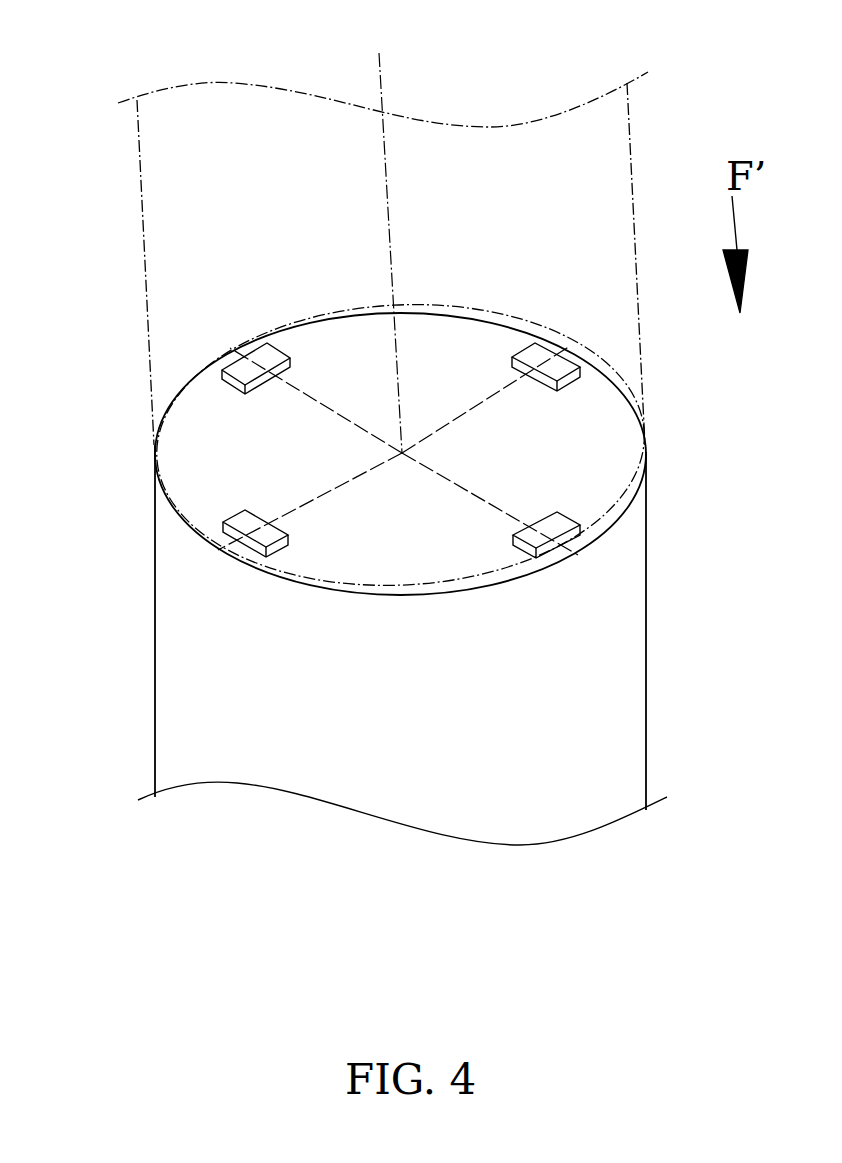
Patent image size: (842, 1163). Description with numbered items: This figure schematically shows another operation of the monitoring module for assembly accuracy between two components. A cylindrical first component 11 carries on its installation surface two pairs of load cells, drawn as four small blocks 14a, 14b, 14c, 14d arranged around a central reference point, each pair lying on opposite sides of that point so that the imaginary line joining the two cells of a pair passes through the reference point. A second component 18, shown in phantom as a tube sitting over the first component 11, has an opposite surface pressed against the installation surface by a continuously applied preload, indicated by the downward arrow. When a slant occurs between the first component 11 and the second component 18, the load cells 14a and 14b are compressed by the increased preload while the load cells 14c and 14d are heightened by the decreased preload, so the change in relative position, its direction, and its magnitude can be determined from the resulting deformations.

The second component 18 is at (632, 170).
The first component 11 is at (646, 692).
The load cell 14a is at (232, 532).
The load cell 14b is at (232, 382).
The load cell 14c is at (557, 545).
The load cell 14d is at (593, 387).